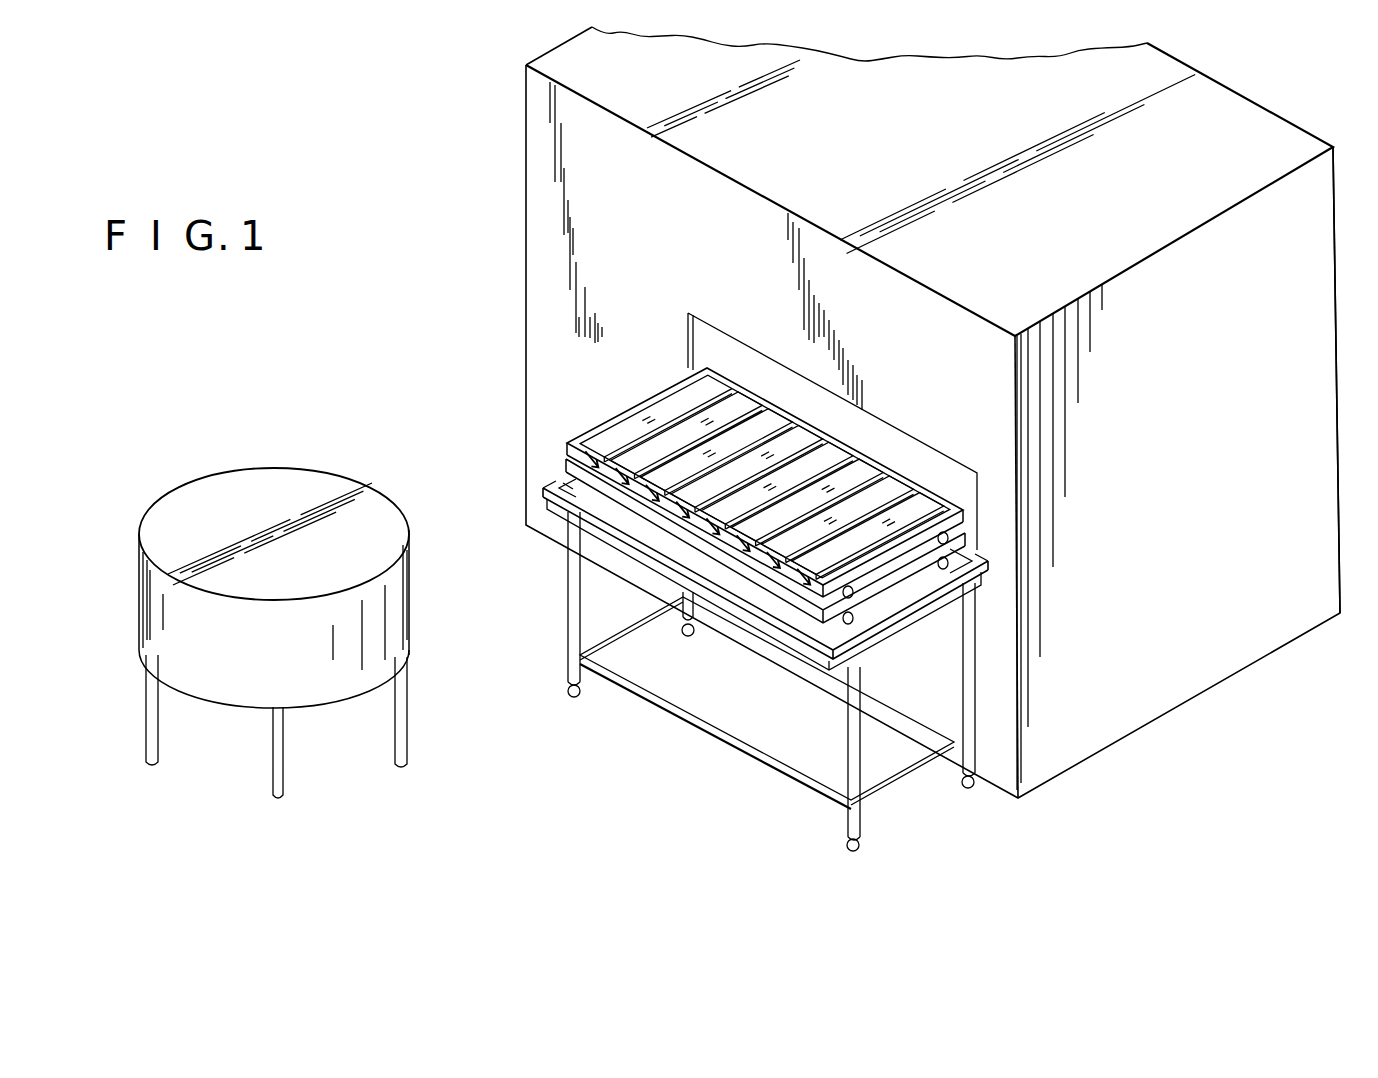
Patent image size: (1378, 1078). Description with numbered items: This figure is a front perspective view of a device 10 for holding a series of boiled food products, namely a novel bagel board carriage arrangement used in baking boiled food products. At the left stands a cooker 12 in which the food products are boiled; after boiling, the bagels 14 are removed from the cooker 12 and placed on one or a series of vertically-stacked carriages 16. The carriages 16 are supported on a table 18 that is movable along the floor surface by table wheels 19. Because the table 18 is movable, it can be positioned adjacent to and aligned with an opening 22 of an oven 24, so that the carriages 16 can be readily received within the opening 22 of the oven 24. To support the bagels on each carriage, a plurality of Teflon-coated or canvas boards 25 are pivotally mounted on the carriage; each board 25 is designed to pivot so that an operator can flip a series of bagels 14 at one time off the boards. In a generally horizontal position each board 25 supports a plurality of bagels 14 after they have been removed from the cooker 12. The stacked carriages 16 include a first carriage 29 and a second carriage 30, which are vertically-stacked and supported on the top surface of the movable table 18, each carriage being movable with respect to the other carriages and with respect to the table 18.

The device 10 is at (518, 161).
The cooker 12 is at (267, 465).
The bagels 14 is at (687, 403).
The carriages 16 is at (633, 400).
The table 18 is at (849, 726).
The table wheels 19 is at (846, 841).
The opening 22 is at (842, 432).
The oven 24 is at (1305, 183).
The boards 25 is at (795, 441).
The first carriage 29 is at (565, 453).
The second carriage 30 is at (567, 468).